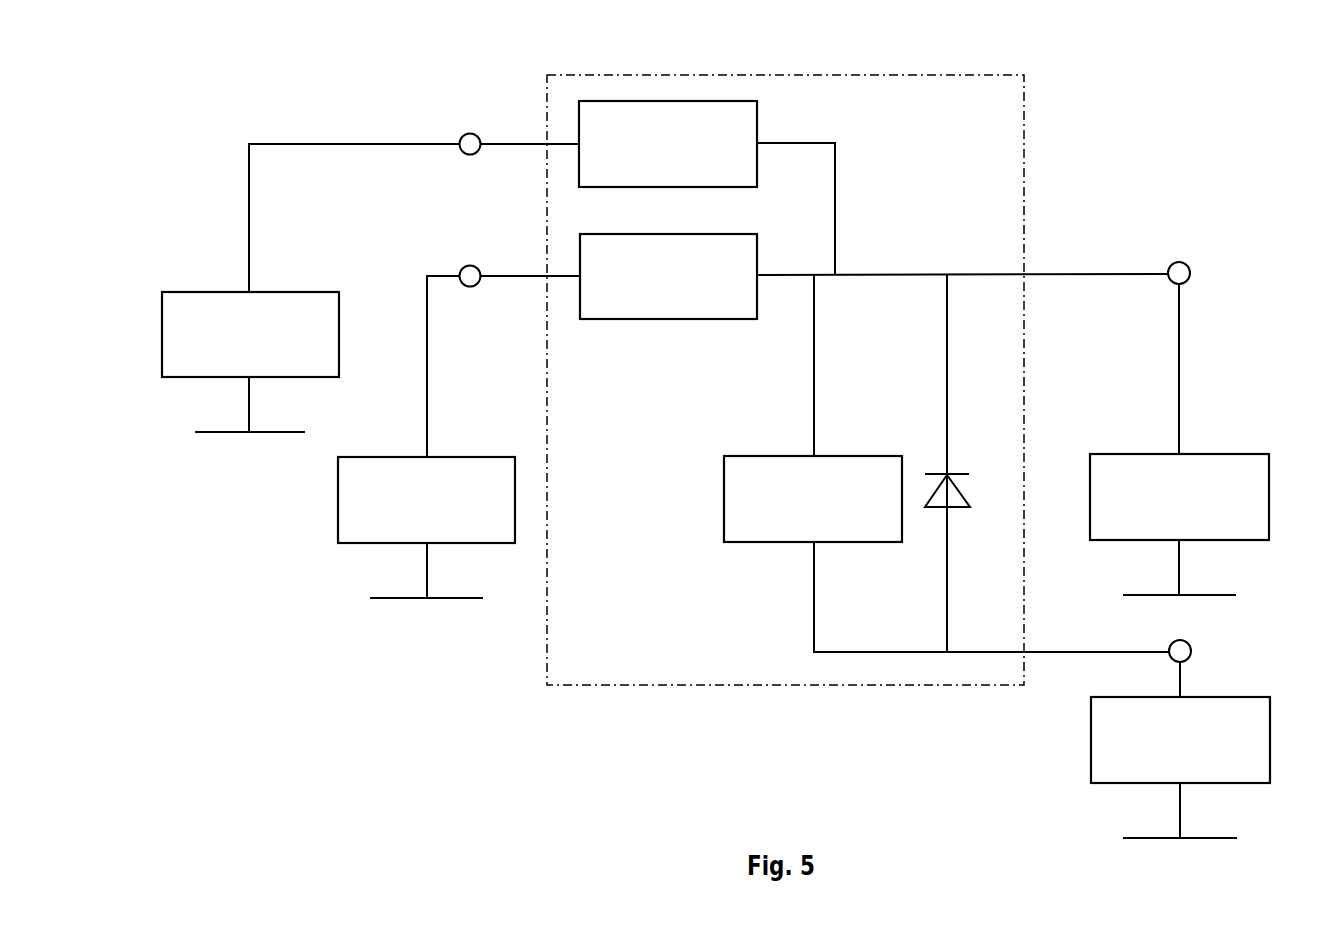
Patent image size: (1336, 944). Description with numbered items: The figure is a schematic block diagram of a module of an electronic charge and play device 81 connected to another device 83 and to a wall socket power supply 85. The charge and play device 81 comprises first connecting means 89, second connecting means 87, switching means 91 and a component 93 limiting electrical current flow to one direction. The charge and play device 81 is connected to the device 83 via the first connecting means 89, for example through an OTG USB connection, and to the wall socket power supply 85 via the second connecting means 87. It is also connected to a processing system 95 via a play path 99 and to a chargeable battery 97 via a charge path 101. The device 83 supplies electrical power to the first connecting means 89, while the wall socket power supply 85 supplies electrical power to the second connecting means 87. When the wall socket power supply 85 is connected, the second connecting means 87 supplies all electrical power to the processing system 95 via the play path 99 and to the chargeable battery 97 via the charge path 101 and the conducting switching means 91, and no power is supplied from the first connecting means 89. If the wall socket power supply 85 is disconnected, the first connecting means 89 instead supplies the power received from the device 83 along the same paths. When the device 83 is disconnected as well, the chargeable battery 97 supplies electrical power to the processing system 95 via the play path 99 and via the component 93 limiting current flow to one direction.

The charge and play device 81 is at (1023, 98).
The device 83 is at (482, 454).
The wall socket power supply 85 is at (293, 289).
The second connecting means 87 is at (739, 97).
The first connecting means 89 is at (658, 320).
The switching means 91 is at (868, 453).
The component limiting electrical current flow to one direction 93 is at (954, 473).
The processing system 95 is at (1235, 451).
The chargeable battery 97 is at (1237, 695).
The play path 99 is at (1123, 272).
The charge path 101 is at (1068, 651).